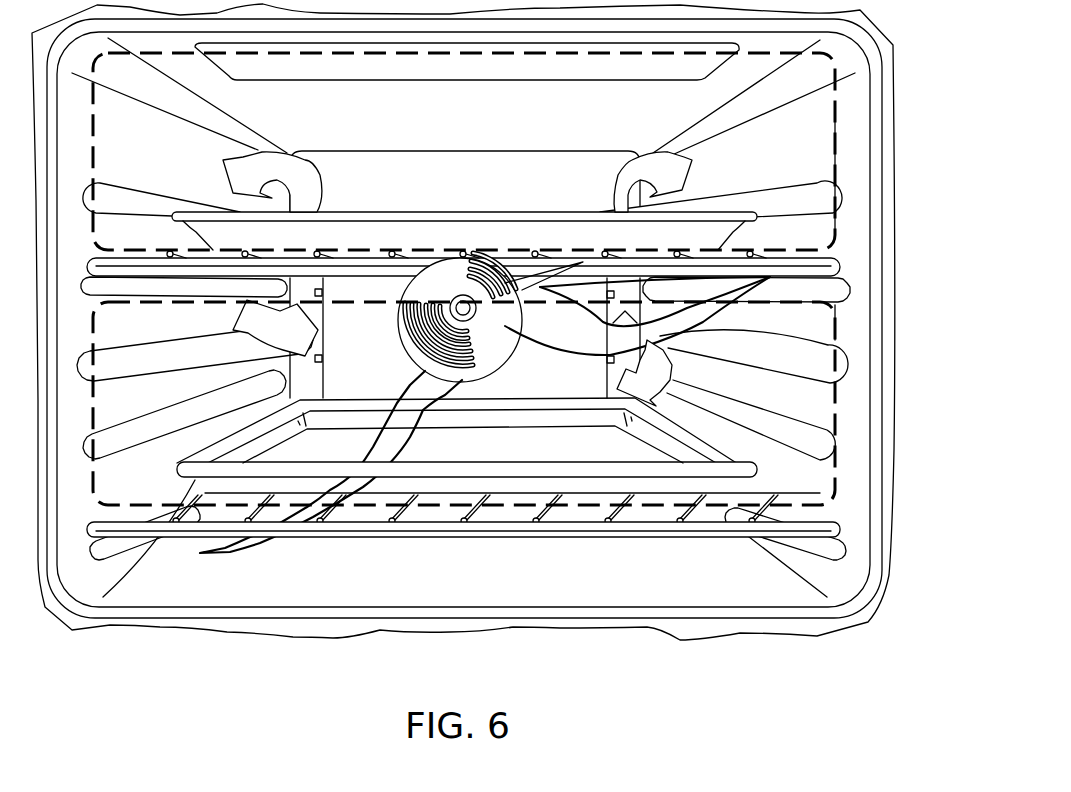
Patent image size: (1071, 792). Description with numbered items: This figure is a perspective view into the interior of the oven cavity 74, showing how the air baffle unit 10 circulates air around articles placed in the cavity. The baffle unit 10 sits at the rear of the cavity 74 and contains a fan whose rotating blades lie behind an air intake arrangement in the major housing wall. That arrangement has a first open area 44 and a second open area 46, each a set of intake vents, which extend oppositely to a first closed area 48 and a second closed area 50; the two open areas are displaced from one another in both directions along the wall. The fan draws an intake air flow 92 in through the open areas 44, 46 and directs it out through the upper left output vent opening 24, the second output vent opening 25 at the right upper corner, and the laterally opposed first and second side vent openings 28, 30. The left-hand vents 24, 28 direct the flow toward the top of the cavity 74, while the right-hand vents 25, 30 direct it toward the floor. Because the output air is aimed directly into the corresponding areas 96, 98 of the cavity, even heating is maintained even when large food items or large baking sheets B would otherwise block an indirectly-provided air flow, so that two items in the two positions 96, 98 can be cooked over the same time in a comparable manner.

The air baffle unit 10 is at (541, 390).
The upper left output vent opening 24 is at (332, 203).
The second output vent opening 25 is at (600, 194).
The first side vent opening 28 is at (308, 356).
The second side vent opening 30 is at (836, 320).
The first open area 44 is at (583, 262).
The second open area 46 is at (442, 319).
The first closed area 48 is at (440, 299).
The second closed area 50 is at (507, 350).
The oven cavity 74 is at (777, 143).
The intake air flow 92 is at (374, 406).
The lower cavity area 96 is at (845, 410).
The upper cavity area 98 is at (843, 232).
The baking sheet B is at (457, 456).